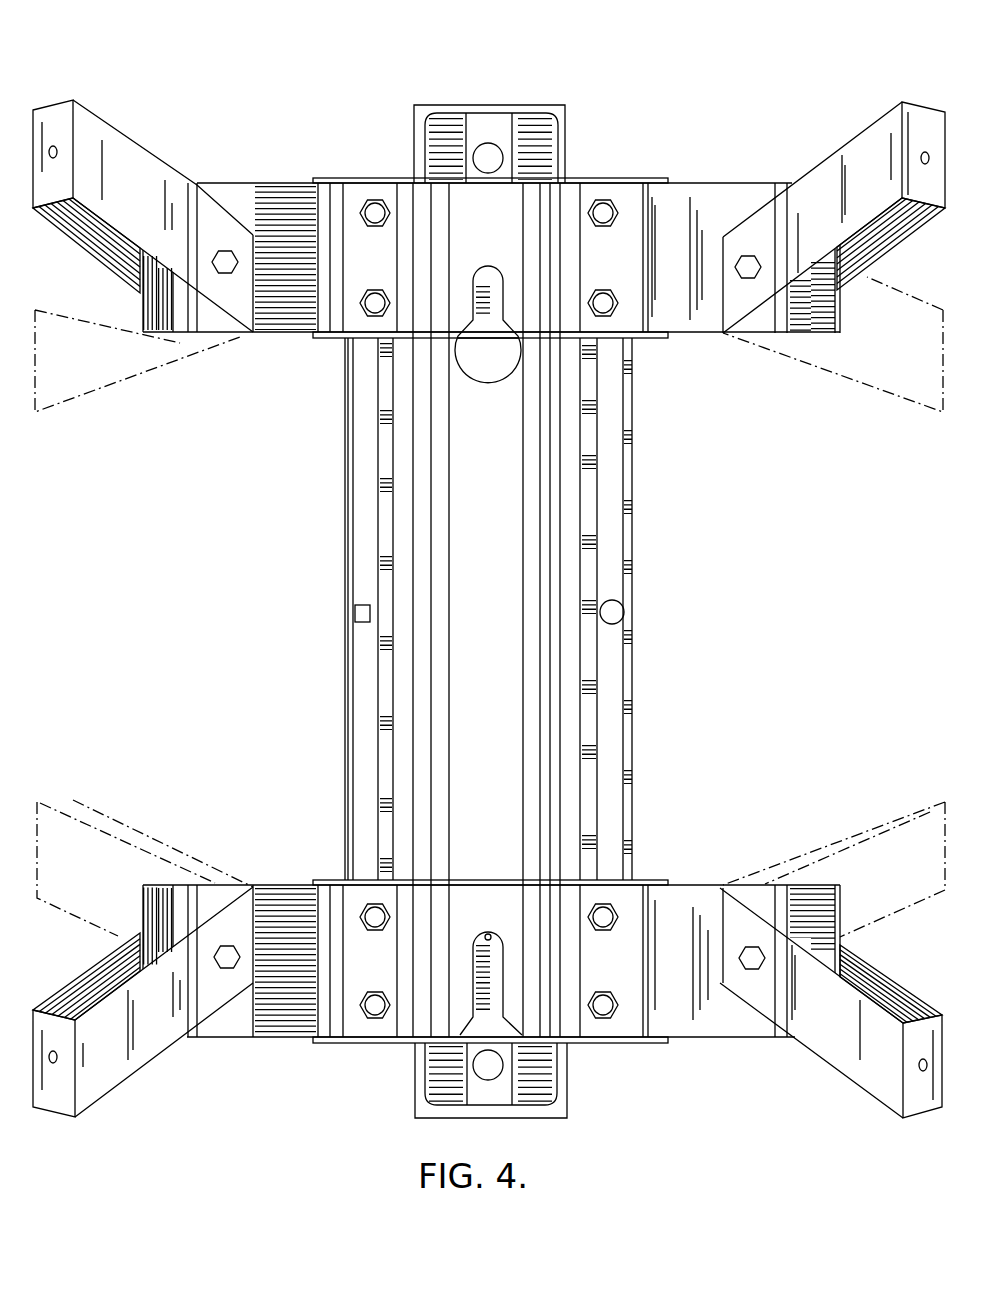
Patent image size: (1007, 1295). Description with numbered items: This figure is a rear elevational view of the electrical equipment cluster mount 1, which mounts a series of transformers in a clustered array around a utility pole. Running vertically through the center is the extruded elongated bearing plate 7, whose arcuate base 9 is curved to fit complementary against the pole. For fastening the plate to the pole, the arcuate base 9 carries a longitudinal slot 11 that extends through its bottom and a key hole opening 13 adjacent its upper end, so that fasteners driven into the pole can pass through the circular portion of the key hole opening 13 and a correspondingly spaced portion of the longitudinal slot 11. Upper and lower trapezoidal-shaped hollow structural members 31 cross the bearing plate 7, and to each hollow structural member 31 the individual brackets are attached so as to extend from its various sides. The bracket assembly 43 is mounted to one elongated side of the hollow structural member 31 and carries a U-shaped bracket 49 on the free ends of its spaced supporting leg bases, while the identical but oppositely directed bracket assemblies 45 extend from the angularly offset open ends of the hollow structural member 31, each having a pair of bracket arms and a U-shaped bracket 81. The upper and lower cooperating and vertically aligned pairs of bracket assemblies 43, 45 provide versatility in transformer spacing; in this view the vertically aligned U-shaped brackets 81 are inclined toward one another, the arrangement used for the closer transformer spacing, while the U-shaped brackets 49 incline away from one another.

The electrical equipment cluster mount 1 is at (195, 495).
The elongated bearing plate 7 is at (345, 575).
The arcuate base 9 is at (504, 551).
The longitudinal slot 11 is at (490, 933).
The key hole opening 13 is at (486, 374).
The hollow structural member 31 is at (595, 180).
The bracket assembly 43 is at (503, 95).
The bracket assembly 45 is at (263, 172).
The U-shaped bracket 49 is at (558, 105).
The U-shaped bracket 81 is at (127, 162).